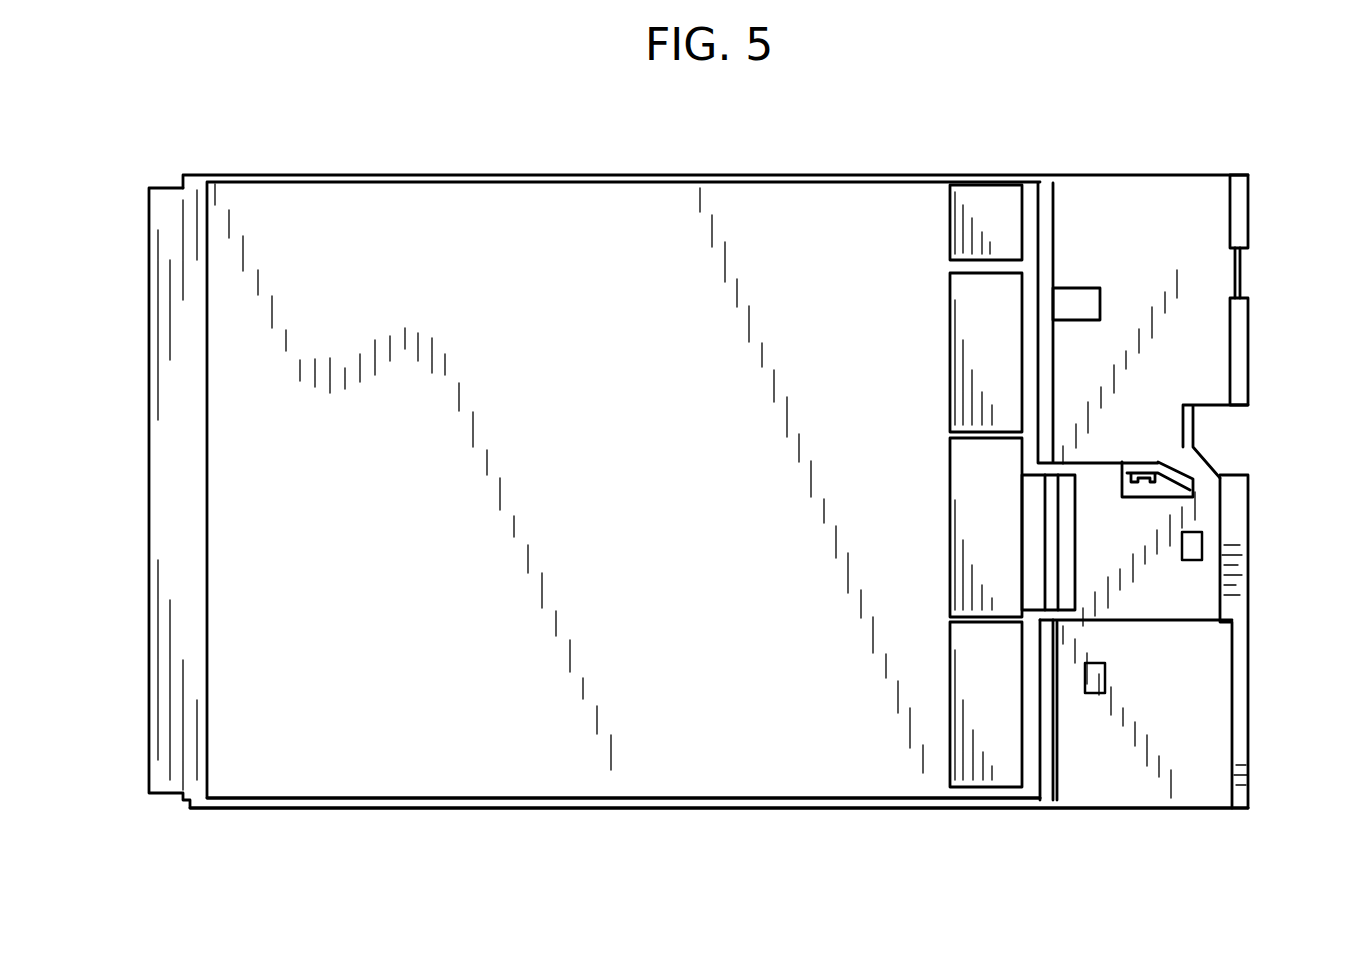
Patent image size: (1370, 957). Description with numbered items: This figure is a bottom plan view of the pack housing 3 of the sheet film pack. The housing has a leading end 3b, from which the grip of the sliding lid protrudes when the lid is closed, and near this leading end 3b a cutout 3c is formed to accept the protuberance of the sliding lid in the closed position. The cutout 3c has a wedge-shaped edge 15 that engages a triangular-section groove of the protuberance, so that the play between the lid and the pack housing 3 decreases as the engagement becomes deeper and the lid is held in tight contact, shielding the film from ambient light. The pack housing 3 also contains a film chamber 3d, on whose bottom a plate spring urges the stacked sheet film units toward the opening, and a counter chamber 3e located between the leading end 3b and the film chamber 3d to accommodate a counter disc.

The pack housing 3 is at (715, 173).
The end of the pack housing 3b is at (1249, 515).
The cutout 3c is at (1214, 447).
The film chamber 3d is at (717, 803).
The counter chamber 3e is at (1150, 622).
The wedge-shaped edge 15 is at (1193, 418).